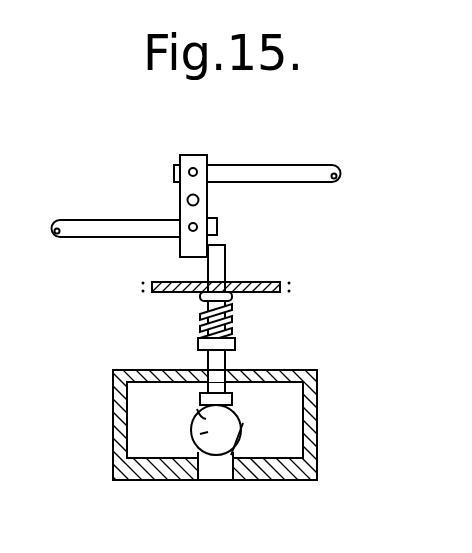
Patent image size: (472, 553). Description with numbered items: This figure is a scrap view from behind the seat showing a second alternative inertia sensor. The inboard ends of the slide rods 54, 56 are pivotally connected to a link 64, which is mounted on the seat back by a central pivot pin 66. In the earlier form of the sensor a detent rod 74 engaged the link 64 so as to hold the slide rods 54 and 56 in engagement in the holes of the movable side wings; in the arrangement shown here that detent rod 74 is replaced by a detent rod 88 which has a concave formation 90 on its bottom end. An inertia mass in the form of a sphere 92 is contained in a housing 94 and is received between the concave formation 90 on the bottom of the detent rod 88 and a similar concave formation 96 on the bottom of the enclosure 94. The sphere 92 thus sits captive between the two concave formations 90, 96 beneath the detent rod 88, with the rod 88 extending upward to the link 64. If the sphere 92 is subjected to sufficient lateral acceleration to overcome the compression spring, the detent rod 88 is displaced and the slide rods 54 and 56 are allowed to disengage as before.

The slide rod 54 is at (295, 165).
The slide rod 56 is at (87, 237).
The link 64 is at (179, 187).
The central pivot pin 66 is at (199, 200).
The detent rod 88 is at (225, 262).
The detent rod 74 is at (232, 325).
The housing 94 is at (118, 420).
The concave formation 90 is at (195, 408).
The concave formation 96 is at (243, 426).
The sphere 92 is at (200, 434).